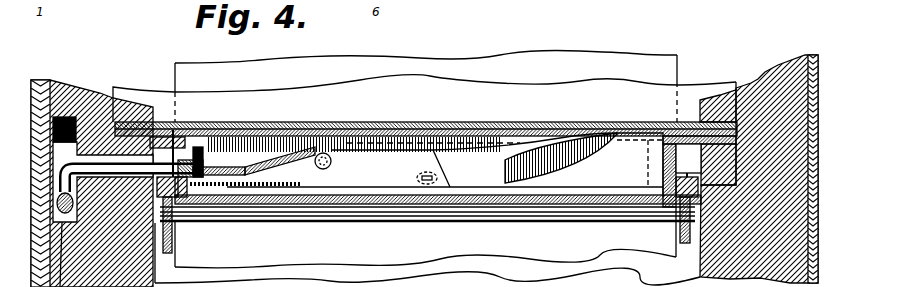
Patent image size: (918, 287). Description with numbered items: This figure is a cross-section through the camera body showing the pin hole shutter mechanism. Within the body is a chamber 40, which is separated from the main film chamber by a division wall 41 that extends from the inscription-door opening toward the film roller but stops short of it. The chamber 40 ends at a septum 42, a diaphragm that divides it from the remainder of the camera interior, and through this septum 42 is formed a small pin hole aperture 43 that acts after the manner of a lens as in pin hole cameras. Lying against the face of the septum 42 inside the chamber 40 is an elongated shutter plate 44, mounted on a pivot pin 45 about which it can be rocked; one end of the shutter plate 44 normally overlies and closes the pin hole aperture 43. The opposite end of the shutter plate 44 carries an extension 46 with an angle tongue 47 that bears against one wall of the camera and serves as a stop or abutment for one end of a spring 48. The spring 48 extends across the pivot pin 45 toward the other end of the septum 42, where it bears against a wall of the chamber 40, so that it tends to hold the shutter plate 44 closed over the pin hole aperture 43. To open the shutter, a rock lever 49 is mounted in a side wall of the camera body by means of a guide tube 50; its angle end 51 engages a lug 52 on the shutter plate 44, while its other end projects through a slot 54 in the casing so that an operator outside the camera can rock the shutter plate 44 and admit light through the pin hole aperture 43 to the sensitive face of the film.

The chamber 40 is at (588, 176).
The division wall 41 is at (497, 204).
The septum 42 is at (548, 165).
The pin hole aperture 43 is at (411, 204).
The shutter plate 44 is at (428, 167).
The pivot pin 45 is at (324, 170).
The extension 46 is at (280, 197).
The angle tongue 47 is at (258, 137).
The spring 48 is at (363, 122).
The rock lever 49 is at (180, 137).
The guide tube 50 is at (105, 100).
The angle end 51 is at (214, 140).
The lug 52 is at (217, 205).
The slot 54 is at (72, 92).